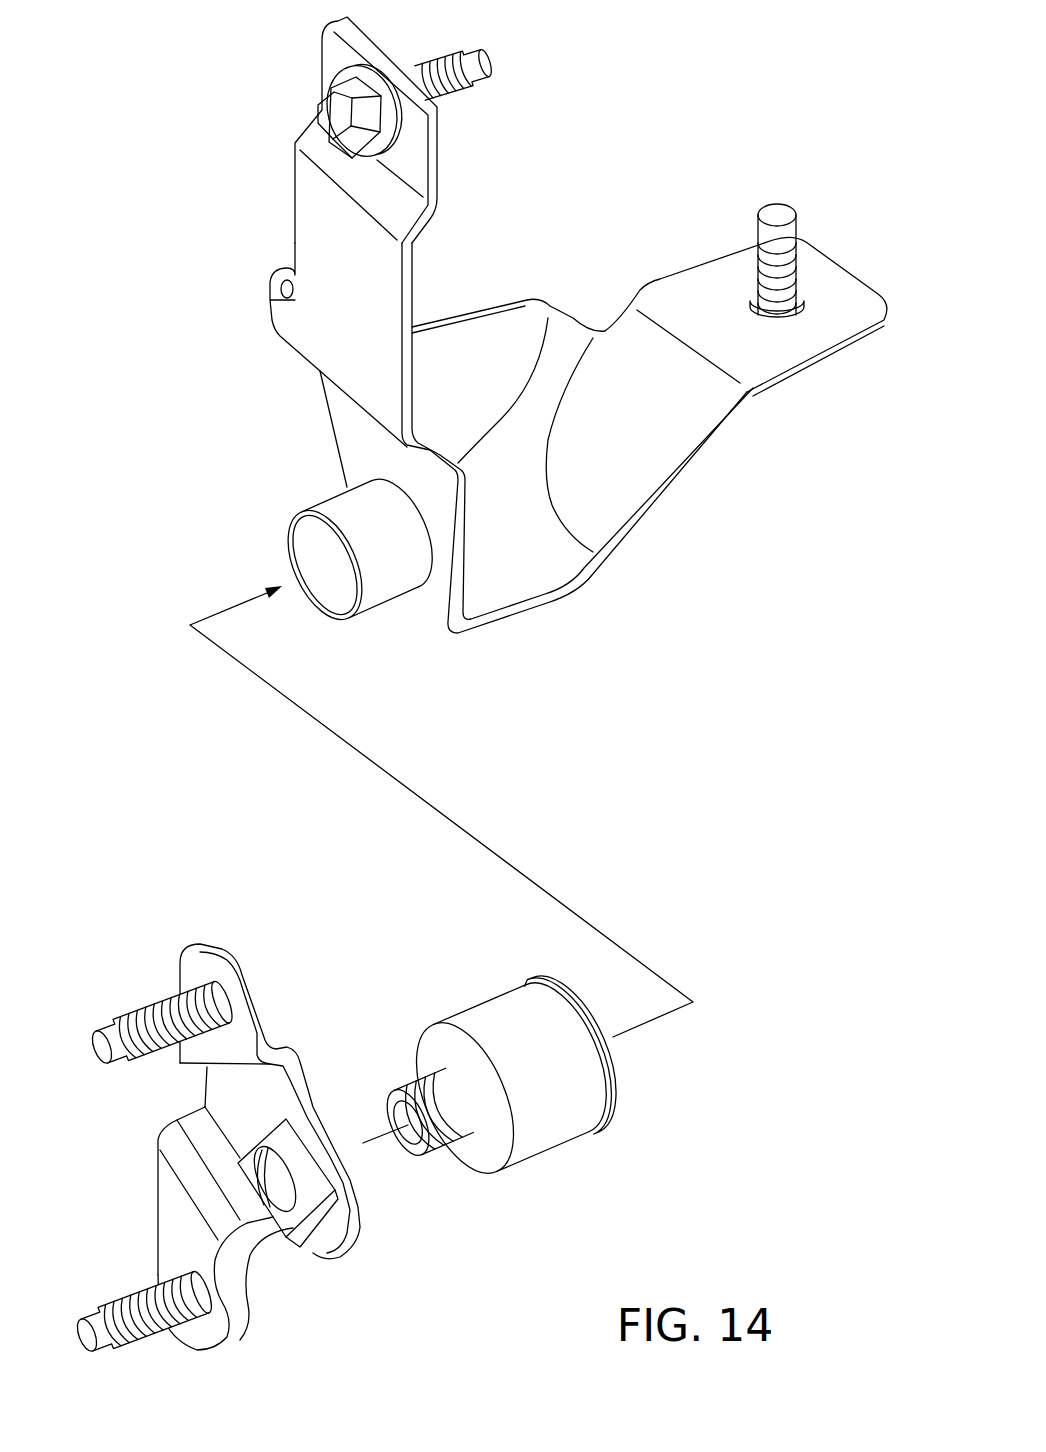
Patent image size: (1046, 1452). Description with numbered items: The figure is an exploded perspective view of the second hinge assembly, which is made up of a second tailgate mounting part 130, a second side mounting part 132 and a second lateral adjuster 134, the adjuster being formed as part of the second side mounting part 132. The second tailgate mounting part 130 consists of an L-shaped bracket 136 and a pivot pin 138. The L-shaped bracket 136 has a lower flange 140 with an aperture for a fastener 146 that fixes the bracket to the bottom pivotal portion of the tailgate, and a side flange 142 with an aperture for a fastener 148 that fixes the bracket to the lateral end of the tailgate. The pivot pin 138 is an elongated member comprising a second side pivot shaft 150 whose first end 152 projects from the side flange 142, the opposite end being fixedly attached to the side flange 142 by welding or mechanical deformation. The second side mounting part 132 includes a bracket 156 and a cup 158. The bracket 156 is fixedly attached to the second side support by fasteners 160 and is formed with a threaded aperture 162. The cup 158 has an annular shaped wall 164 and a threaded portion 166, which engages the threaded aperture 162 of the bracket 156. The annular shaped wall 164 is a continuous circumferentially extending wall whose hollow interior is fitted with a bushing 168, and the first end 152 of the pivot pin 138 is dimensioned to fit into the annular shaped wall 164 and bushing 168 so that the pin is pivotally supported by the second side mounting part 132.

The second tailgate mounting part 130 is at (170, 367).
The second side mounting part 132 is at (262, 905).
The second lateral adjuster 134 is at (470, 1235).
The L-shaped bracket 136 is at (298, 367).
The pivot pin 138 is at (286, 517).
The lower flange 140 is at (640, 433).
The side flange 142 is at (323, 222).
The fastener 146 is at (752, 283).
The fastener 148 is at (443, 58).
The second side pivot shaft 150 is at (384, 580).
The first end 152 is at (335, 622).
The bracket 156 is at (281, 1006).
The cup 158 is at (466, 985).
The fasteners 160 is at (150, 1010).
The threaded aperture 162 is at (278, 1225).
The annular shaped wall 164 is at (537, 1117).
The threaded portion 166 is at (443, 1145).
The bushing 168 is at (575, 1000).